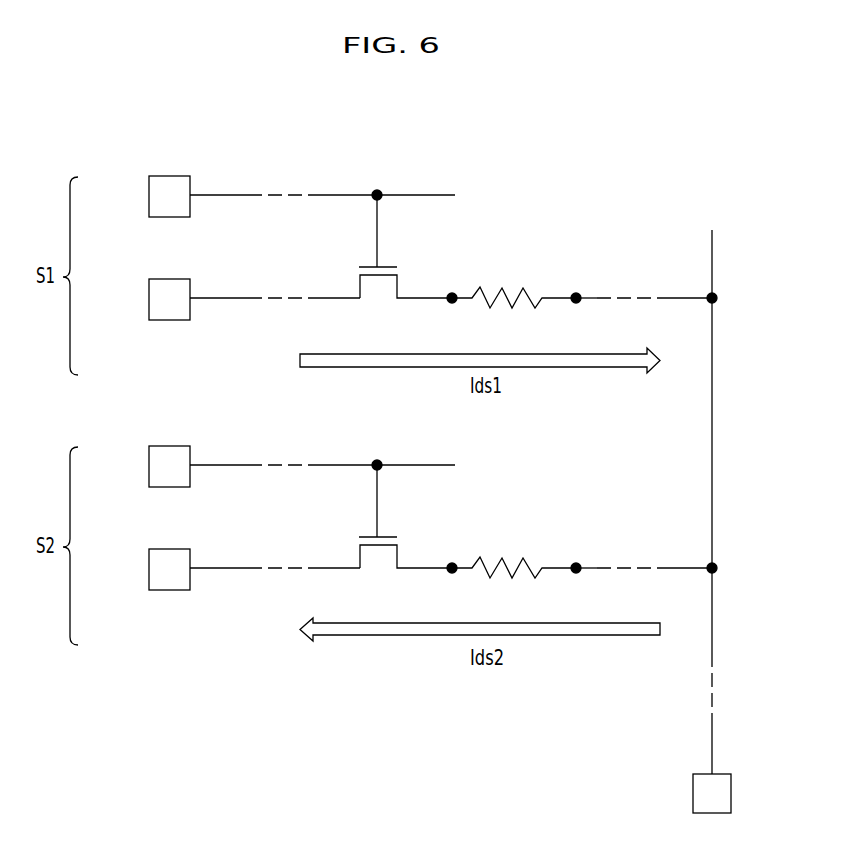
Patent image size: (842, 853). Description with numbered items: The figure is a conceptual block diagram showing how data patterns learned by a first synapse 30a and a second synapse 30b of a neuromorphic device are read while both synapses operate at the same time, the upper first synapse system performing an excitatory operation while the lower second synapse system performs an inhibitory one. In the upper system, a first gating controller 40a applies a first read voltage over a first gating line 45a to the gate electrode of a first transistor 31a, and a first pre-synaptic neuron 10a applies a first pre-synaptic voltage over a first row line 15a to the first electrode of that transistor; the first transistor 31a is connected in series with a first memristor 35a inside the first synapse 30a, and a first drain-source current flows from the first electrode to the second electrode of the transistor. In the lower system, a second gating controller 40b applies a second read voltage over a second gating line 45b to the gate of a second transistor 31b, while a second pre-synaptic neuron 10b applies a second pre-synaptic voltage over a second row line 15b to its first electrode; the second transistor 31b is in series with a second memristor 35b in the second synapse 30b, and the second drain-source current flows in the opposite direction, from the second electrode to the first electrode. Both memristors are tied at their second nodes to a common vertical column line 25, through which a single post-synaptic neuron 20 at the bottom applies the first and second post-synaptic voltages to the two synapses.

The first gating controller 40a is at (149, 196).
The first gating line 45a is at (227, 193).
The first pre-synaptic neuron 10a is at (149, 298).
The first row line 15a is at (227, 296).
The first synapse 30a is at (464, 263).
The first transistor 31a is at (408, 271).
The first memristor 35a is at (508, 285).
The second gating controller 40b is at (149, 466).
The second gating line 45b is at (227, 463).
The second pre-synaptic neuron 10b is at (149, 568).
The second row line 15b is at (227, 566).
The second synapse 30b is at (464, 533).
The second transistor 31b is at (408, 541).
The second memristor 35b is at (508, 555).
The column line 25 is at (717, 328).
The post-synaptic neuron 20 is at (733, 790).